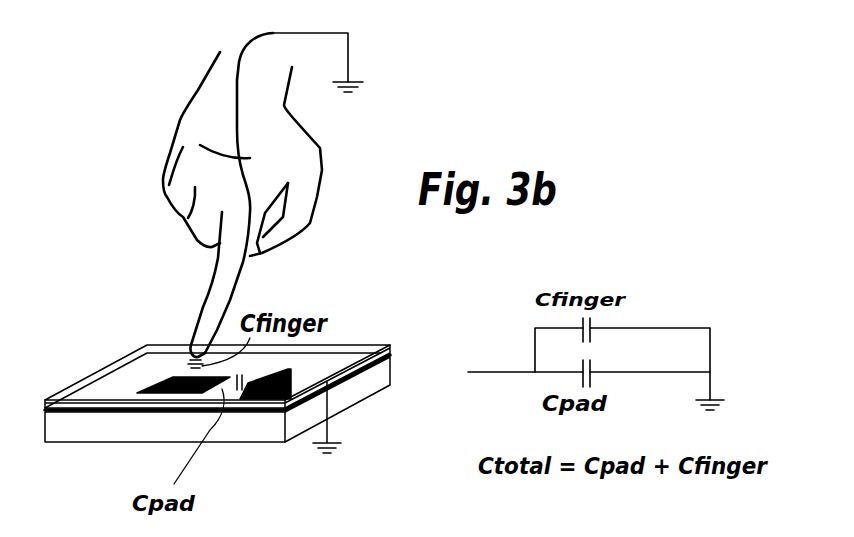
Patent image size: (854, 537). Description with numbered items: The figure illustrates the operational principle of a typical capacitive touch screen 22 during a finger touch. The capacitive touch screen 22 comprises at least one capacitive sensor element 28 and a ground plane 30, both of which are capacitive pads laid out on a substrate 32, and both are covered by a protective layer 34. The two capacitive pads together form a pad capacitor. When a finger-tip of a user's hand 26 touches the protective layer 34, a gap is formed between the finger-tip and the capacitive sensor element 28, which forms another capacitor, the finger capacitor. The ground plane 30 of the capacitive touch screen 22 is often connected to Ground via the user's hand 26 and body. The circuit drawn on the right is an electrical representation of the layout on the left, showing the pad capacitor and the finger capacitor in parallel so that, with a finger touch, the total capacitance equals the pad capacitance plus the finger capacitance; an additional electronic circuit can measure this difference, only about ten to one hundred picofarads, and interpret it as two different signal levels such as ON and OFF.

The capacitive touch screen 22 is at (201, 357).
The user's hand 26 is at (195, 98).
The capacitive sensor element 28 is at (173, 382).
The ground plane 30 is at (303, 378).
The substrate 32 is at (125, 442).
The protective layer 34 is at (80, 383).